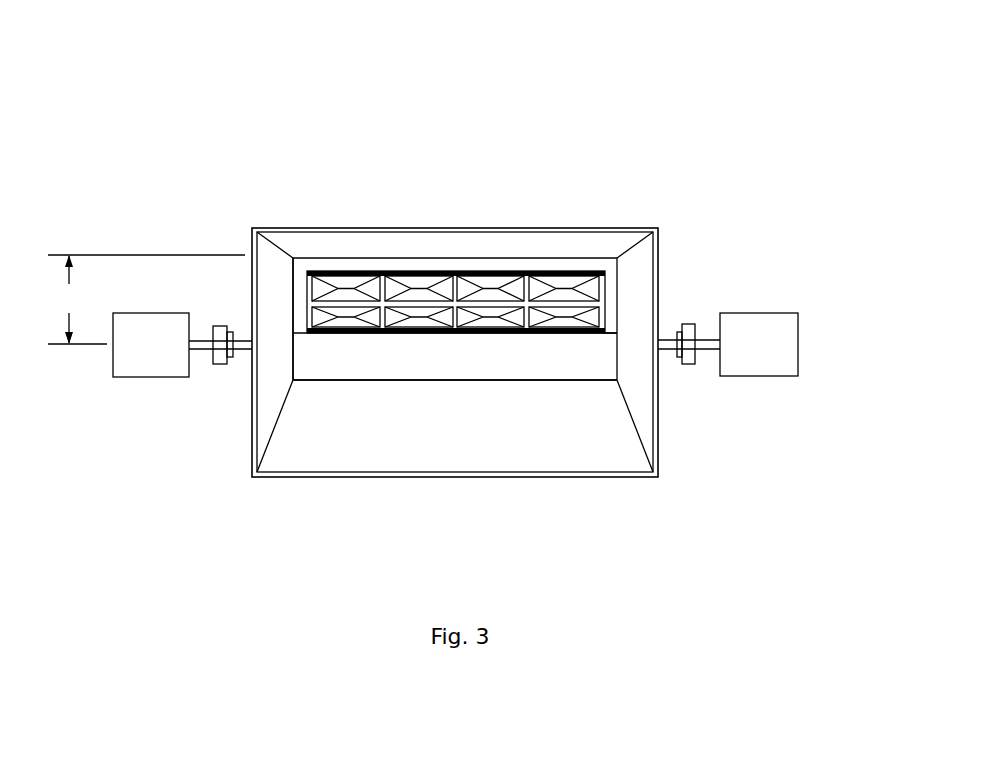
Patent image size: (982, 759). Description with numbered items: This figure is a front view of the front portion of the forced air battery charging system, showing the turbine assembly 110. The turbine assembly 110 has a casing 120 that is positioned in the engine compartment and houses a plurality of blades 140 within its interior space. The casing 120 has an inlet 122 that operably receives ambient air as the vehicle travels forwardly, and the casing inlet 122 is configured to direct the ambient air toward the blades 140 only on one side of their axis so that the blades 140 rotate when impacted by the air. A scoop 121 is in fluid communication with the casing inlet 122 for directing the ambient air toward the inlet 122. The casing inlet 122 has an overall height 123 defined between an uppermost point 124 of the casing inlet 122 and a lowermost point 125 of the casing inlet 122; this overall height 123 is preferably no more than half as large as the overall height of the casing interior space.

The turbine assembly 110 is at (517, 78).
The scoop 121 is at (637, 218).
The uppermost point of the casing inlet 124 is at (356, 258).
The casing inlet 122 is at (297, 306).
The blades 140 is at (557, 271).
The casing 120 is at (378, 352).
The lowermost point of the casing inlet 125 is at (609, 333).
The overall height of the casing inlet 123 is at (146, 299).